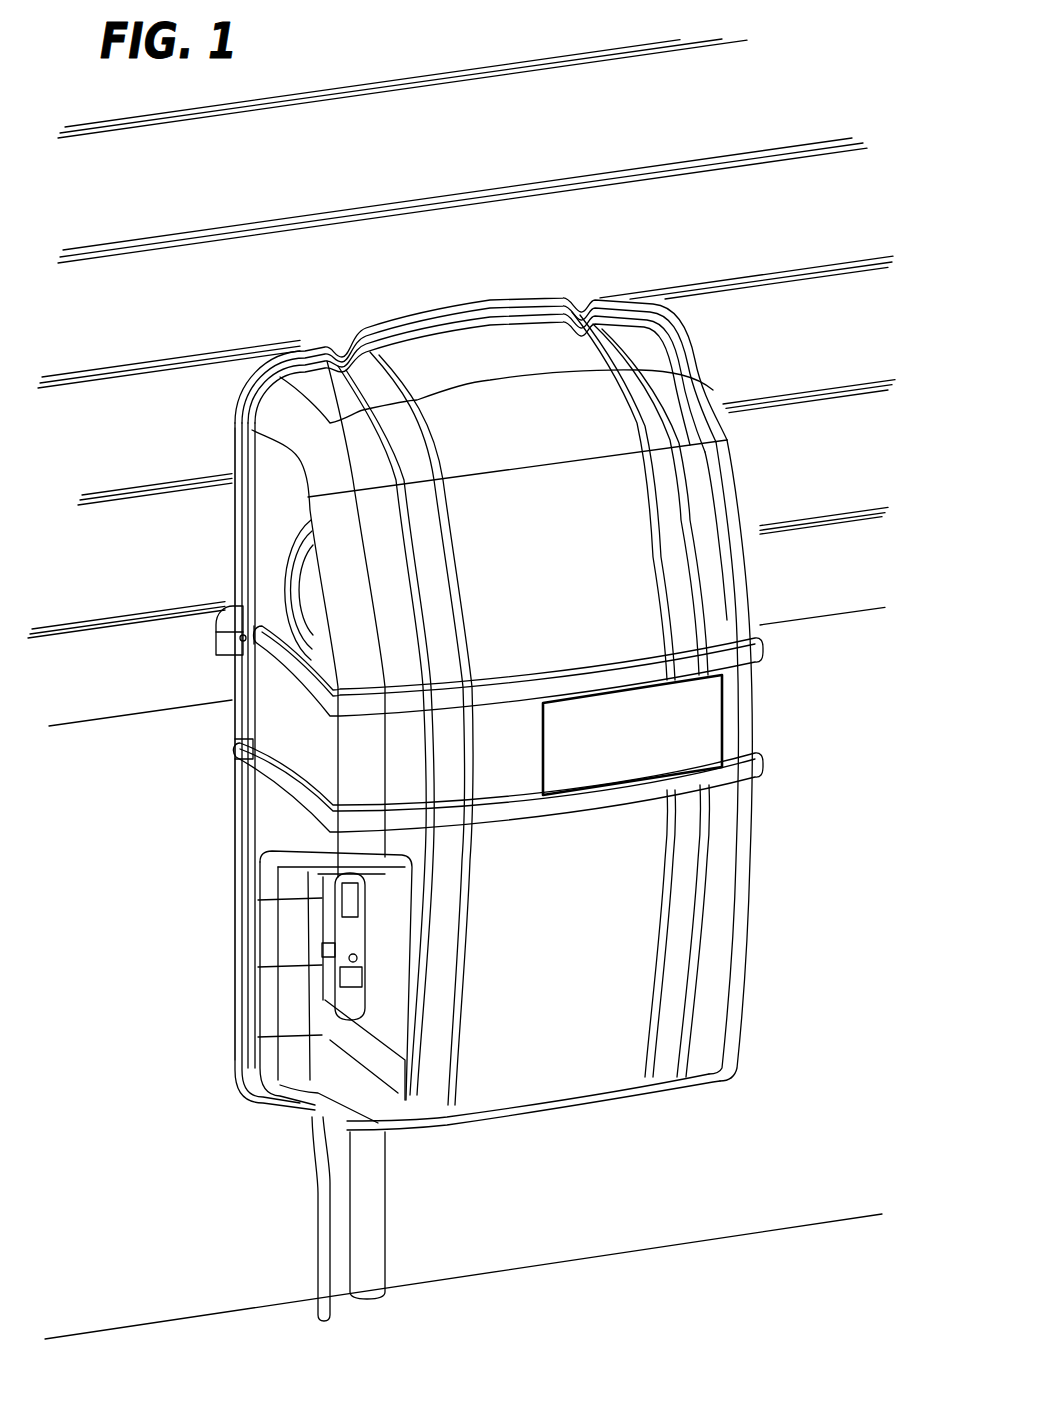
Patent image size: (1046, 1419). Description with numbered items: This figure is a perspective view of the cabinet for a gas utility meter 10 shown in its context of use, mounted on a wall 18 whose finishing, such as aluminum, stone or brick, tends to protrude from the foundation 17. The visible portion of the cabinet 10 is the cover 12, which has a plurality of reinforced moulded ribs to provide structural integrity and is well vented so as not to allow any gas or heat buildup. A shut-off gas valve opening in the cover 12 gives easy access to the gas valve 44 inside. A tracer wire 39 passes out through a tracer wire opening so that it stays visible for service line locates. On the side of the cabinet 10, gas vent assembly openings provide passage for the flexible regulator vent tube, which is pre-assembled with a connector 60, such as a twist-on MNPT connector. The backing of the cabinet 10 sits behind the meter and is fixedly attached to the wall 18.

The cabinet for gas utility meter 10 is at (150, 893).
The cover 12 is at (551, 594).
The foundation 17 is at (840, 1048).
The wall 18 is at (760, 224).
The tracer wire 39 is at (197, 800).
The gas valve 44 is at (337, 940).
The connector 60 is at (214, 631).